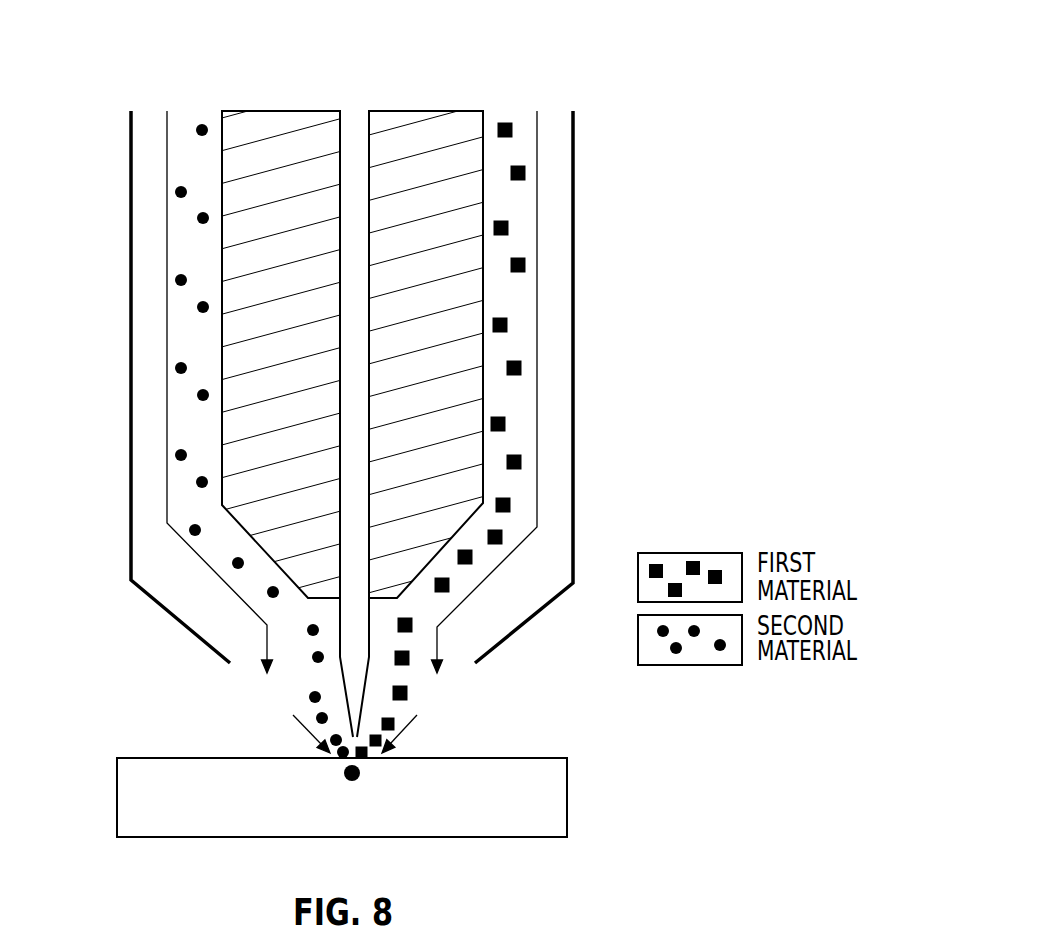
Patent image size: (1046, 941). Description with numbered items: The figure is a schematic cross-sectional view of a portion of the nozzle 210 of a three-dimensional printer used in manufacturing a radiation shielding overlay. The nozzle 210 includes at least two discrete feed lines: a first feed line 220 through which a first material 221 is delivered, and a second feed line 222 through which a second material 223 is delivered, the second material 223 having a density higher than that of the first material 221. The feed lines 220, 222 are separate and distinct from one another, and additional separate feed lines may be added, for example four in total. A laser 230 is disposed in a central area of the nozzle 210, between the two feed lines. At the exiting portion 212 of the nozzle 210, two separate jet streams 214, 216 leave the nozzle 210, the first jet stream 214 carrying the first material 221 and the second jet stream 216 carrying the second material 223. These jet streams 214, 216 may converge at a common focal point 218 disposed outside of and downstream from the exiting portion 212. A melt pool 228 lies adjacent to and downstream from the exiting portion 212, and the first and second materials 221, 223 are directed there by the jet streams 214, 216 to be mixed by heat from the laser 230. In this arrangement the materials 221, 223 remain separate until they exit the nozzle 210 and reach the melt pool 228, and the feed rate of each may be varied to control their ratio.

The nozzle 210 is at (657, 118).
The exiting portion 212 is at (487, 674).
The first jet stream 214 is at (439, 706).
The second jet stream 216 is at (272, 707).
The common focal point 218 is at (362, 779).
The first feed line 220 is at (548, 277).
The first material 221 is at (512, 380).
The second feed line 222 is at (154, 316).
The second material 223 is at (183, 393).
The melt pool 228 is at (513, 838).
The laser 230 is at (365, 252).